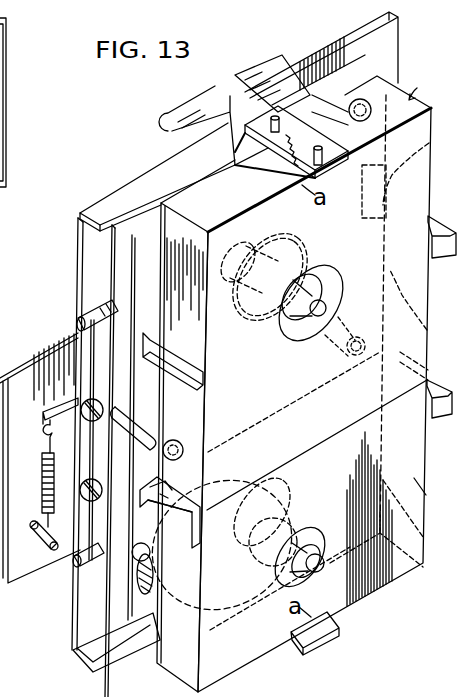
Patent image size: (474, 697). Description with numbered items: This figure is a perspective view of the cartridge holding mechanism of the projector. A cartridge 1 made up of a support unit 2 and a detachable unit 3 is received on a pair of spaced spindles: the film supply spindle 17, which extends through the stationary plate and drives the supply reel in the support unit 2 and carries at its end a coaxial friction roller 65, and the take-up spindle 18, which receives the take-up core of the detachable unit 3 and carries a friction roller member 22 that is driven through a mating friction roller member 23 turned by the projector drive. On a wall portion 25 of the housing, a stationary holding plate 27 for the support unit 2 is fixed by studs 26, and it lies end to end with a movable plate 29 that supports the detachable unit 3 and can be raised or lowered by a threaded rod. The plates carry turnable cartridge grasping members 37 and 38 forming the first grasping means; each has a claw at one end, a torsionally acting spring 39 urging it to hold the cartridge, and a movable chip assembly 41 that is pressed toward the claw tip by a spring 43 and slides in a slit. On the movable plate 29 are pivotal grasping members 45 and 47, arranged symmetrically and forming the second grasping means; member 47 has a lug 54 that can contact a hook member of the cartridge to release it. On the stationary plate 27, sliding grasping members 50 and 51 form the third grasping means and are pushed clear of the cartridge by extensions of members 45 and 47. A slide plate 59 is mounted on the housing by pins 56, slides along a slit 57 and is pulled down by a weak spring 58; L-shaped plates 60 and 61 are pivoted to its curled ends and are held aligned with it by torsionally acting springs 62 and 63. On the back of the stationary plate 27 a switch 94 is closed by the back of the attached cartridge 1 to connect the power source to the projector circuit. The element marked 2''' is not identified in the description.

The cartridge 1 is at (417, 83).
The support unit 2 is at (303, 384).
The mounting plate 2''' is at (21, 102).
The detachable unit 3 is at (414, 478).
The film supply spindle 17 is at (320, 286).
The take-up spindle 18 is at (314, 572).
The friction roller member 22 is at (262, 550).
The mating friction roller member 23 is at (230, 615).
The wall portion 25 is at (358, 50).
The studs 26 is at (319, 72).
The stationary holding plate 27 is at (427, 331).
The movable plate 29 is at (431, 545).
The cartridge grasping member 37 is at (288, 118).
The cartridge grasping member 38 is at (316, 647).
The torsionally acting spring 39 is at (203, 96).
The movable chip assembly 41 is at (258, 118).
The spring 43 is at (312, 146).
The cartridge grasping member 45 is at (452, 412).
The cartridge grasping member 47 is at (155, 513).
The cartridge grasping member 50 is at (452, 258).
The cartridge grasping member 51 is at (148, 330).
The lug 54 is at (163, 455).
The pins 56 is at (40, 533).
The slit 57 is at (90, 445).
The spring 58 is at (43, 475).
The slide plate 59 is at (75, 342).
The L-shaped plate 60 is at (78, 236).
The L-shaped plate 61 is at (72, 627).
The torsionally acting spring 62 is at (80, 306).
The torsionally acting spring 63 is at (90, 573).
The friction roller 65 is at (290, 243).
The switch 94 is at (429, 143).